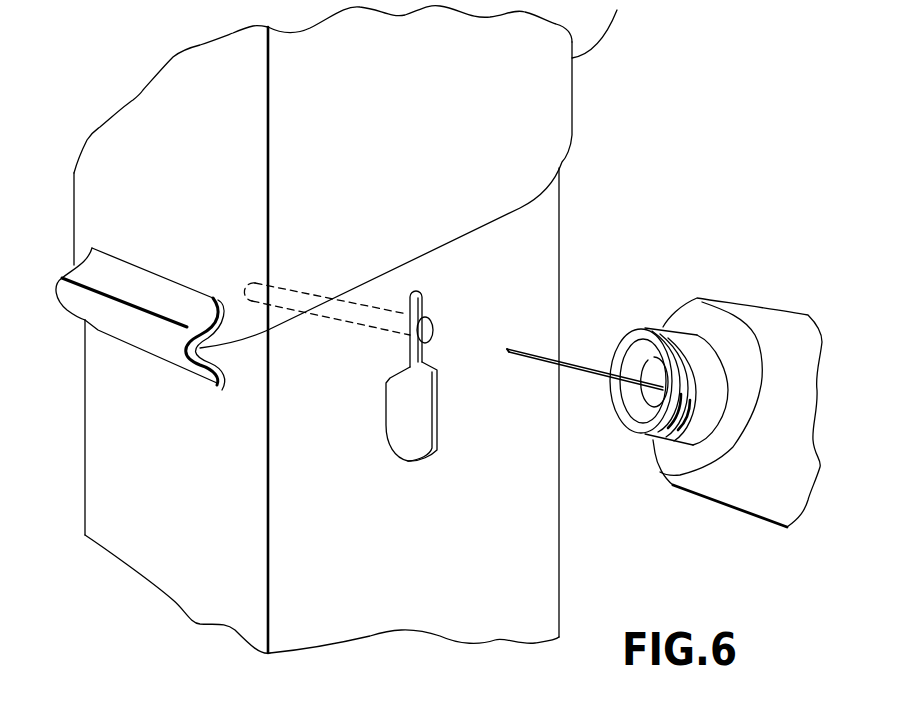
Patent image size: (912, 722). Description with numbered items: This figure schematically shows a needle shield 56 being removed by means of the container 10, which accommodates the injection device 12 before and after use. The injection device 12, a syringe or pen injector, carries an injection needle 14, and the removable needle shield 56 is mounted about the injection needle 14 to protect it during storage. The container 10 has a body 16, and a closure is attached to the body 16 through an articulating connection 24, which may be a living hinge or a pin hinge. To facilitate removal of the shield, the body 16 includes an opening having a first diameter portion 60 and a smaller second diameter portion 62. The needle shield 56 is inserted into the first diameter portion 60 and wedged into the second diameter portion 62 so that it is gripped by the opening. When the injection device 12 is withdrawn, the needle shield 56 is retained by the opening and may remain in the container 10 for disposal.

The container 10 is at (585, 105).
The injection device 12 is at (756, 305).
The injection needle 14 is at (583, 363).
The body 16 is at (540, 527).
The articulating connection 24 is at (90, 300).
The needle shield 56 is at (433, 322).
The first diameter portion 60 is at (426, 418).
The second diameter portion 62 is at (410, 348).